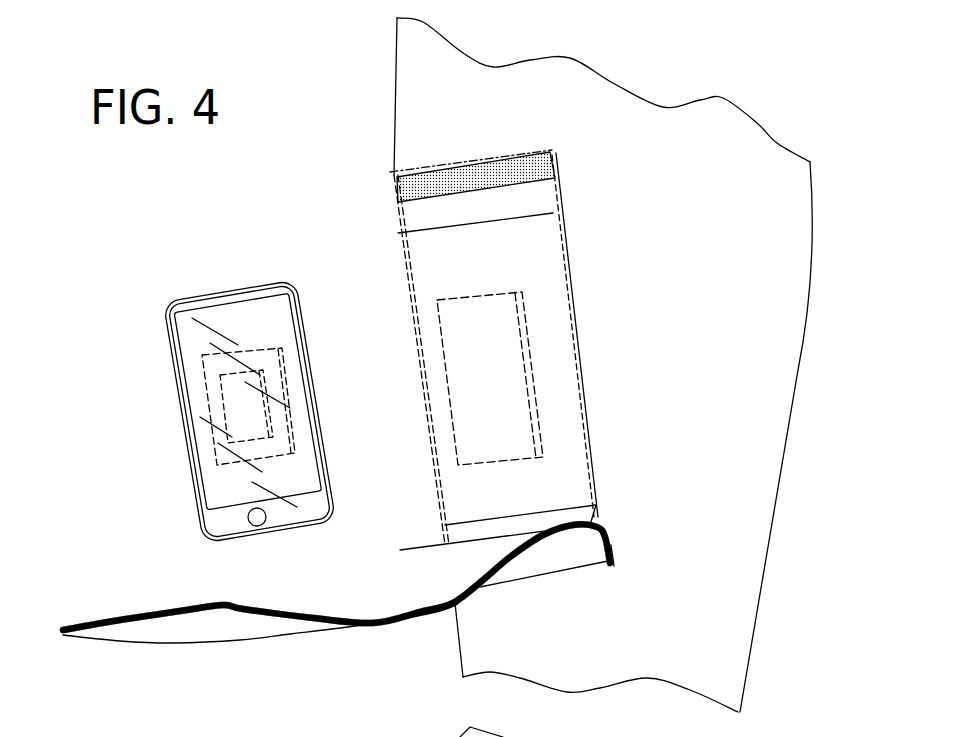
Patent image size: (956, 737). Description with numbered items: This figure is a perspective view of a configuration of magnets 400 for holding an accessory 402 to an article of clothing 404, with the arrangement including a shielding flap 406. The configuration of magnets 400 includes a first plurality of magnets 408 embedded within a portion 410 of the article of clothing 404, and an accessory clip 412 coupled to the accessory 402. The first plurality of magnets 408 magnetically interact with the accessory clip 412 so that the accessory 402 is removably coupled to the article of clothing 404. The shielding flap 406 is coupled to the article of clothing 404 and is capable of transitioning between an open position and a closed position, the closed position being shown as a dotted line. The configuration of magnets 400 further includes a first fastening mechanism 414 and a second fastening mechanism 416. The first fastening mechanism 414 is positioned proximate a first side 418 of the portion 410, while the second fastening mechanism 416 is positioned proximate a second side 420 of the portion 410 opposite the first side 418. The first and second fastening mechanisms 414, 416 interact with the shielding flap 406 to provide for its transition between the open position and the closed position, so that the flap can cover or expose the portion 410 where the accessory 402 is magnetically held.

The configuration of magnets 400 is at (92, 401).
The accessory 402 is at (170, 297).
The article of clothing 404 is at (713, 620).
The shielding flap 406 is at (187, 630).
The first plurality of magnets 408 is at (530, 357).
The portion 410 is at (580, 427).
The accessory clip 412 is at (248, 353).
The first fastening mechanism 414 is at (614, 562).
The second fastening mechanism 416 is at (428, 182).
The first side 418 is at (588, 514).
The second side 420 is at (543, 195).